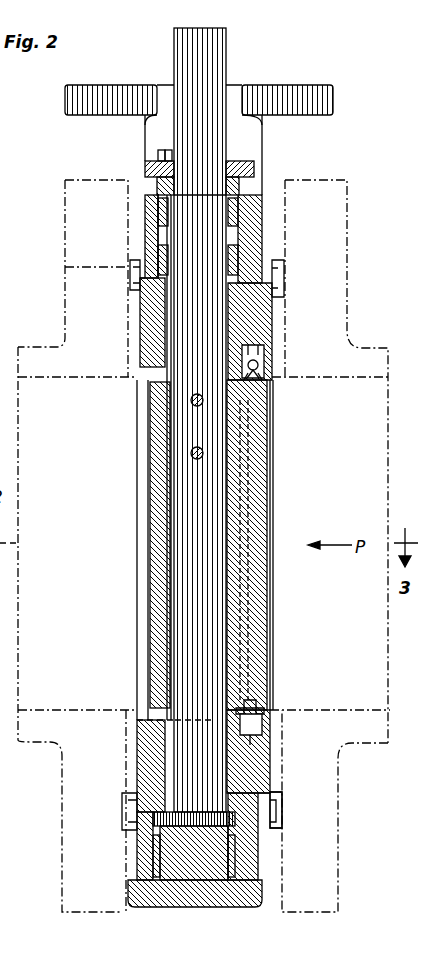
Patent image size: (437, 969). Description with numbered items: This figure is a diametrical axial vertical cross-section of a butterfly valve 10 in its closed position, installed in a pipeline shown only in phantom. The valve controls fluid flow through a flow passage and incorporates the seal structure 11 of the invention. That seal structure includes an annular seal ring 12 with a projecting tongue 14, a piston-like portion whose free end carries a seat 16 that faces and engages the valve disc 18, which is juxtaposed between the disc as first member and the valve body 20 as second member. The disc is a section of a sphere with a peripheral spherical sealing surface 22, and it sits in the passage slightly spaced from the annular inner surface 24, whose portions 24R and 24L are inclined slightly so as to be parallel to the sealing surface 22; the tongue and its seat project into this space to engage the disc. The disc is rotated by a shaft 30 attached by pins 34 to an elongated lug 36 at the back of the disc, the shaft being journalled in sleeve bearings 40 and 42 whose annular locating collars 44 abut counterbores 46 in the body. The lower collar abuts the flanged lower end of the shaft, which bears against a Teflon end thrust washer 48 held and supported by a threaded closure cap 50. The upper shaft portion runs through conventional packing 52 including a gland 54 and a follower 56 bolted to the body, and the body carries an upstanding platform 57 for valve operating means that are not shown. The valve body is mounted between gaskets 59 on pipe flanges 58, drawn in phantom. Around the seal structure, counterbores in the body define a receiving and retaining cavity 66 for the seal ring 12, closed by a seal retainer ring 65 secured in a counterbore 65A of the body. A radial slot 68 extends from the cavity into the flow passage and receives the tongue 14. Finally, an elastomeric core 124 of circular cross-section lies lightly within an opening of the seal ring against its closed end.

The butterfly valve 10 is at (292, 42).
The seal structure 11 is at (276, 378).
The annular seal ring 12 is at (263, 358).
The tongue 14 is at (256, 405).
The seat 16 is at (250, 702).
The valve disc 18 is at (264, 538).
The valve body 20 is at (260, 860).
The spherical sealing surface 22 is at (270, 720).
The annular inner surface 24 is at (140, 712).
The inner surface portion 24L is at (244, 690).
The inner surface portion 24R is at (262, 712).
The shaft 30 is at (180, 64).
The pins 34 is at (191, 455).
The elongated lug 36 is at (150, 462).
The sleeve bearing 40 is at (137, 745).
The sleeve bearing 42 is at (150, 330).
The annular locating collar 44 is at (147, 290).
The counterbore 46 is at (146, 226).
The end thrust washer 48 is at (240, 836).
The threaded closure cap 50 is at (190, 897).
The packing 52 is at (262, 232).
The gland 54 is at (160, 186).
The follower 56 is at (245, 166).
The upstanding platform 57 is at (80, 87).
The pipe flange 58 is at (72, 192).
The gasket 59 is at (128, 267).
The seal retainer ring 65 is at (272, 764).
The counterbore 65A is at (265, 775).
The cavity 66 is at (242, 366).
The radial slot 68 is at (247, 497).
The elastomeric core 124 is at (272, 740).